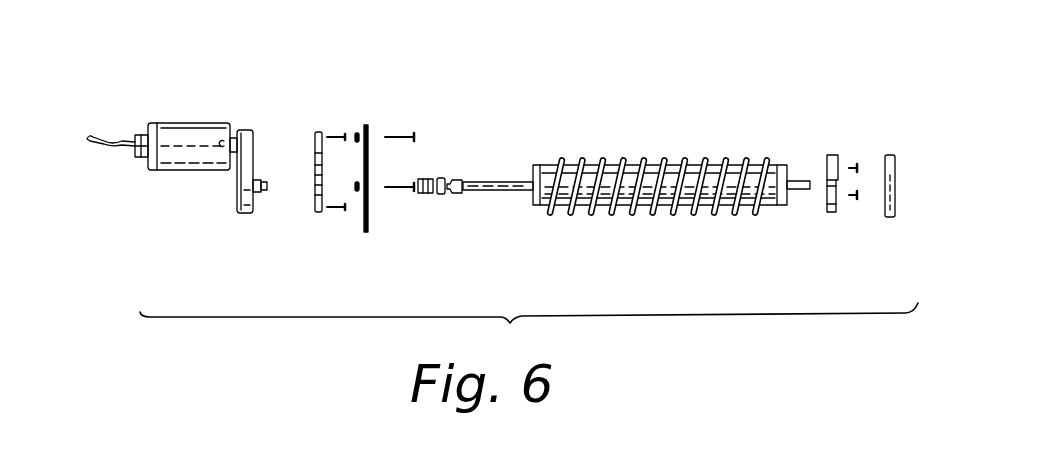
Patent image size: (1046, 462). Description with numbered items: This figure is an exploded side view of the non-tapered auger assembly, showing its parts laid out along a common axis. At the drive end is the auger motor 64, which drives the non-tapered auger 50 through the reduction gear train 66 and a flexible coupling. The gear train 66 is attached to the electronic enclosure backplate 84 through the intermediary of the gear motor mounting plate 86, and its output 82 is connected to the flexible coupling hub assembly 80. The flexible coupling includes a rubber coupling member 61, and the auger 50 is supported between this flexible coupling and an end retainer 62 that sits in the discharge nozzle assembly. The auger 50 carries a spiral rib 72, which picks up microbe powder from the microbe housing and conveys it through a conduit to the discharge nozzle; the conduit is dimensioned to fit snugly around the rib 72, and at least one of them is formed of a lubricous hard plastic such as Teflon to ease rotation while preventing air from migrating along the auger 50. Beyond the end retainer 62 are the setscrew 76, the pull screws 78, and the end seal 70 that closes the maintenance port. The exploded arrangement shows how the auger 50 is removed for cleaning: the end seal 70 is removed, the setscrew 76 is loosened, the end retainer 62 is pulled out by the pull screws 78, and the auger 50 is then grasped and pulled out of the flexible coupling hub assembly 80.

The non-tapered auger 50 is at (652, 163).
The rubber coupling member 61 is at (443, 176).
The end retainer 62 is at (832, 213).
The auger motor 64 is at (227, 170).
The reduction gear train 66 is at (245, 212).
The end seal 70 is at (892, 219).
The spiral rib 72 is at (638, 208).
The setscrew 76 is at (828, 153).
The pull screws 78 is at (855, 163).
The flexible coupling hub assembly 80 is at (475, 224).
The output 82 is at (267, 181).
The electronic enclosure backplate 84 is at (369, 217).
The gear motor mounting plate 86 is at (317, 189).